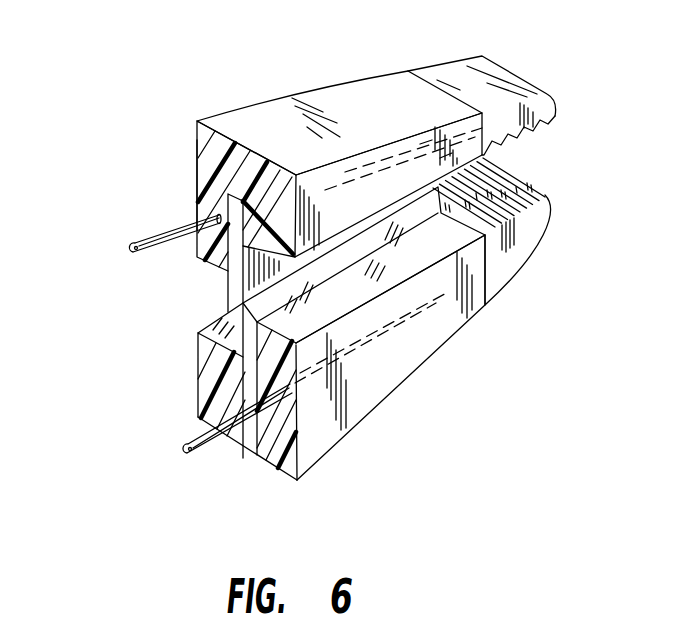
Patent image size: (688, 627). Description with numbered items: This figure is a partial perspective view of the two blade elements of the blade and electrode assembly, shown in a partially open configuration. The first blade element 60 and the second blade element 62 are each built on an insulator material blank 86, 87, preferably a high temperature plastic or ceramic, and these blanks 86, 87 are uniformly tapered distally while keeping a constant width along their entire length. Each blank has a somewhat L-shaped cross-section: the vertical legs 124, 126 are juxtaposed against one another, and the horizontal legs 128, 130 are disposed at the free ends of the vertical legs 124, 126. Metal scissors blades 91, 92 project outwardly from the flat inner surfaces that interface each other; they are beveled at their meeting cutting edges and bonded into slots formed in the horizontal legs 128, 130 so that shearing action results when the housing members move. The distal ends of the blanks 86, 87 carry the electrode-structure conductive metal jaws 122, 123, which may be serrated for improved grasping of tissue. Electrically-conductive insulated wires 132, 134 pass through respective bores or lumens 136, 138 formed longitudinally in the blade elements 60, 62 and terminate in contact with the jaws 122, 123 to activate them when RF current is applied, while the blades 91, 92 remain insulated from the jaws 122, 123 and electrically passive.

The first blade element 60 is at (447, 347).
The second blade element 62 is at (245, 110).
The insulator material blank 86 is at (486, 306).
The insulator material blank 87 is at (390, 80).
The metal scissors blade 91 is at (250, 387).
The metal scissors blade 92 is at (217, 275).
The conductive metal jaw 122 is at (535, 186).
The conductive metal jaw 123 is at (492, 68).
The vertical leg 124 is at (196, 187).
The vertical leg 126 is at (323, 458).
The horizontal leg 128 is at (196, 142).
The horizontal leg 130 is at (197, 359).
The electrically-conductive insulated wire 132 is at (132, 252).
The electrically-conductive insulated wire 134 is at (187, 447).
The bore or lumen 136 is at (215, 220).
The bore or lumen 138 is at (271, 466).